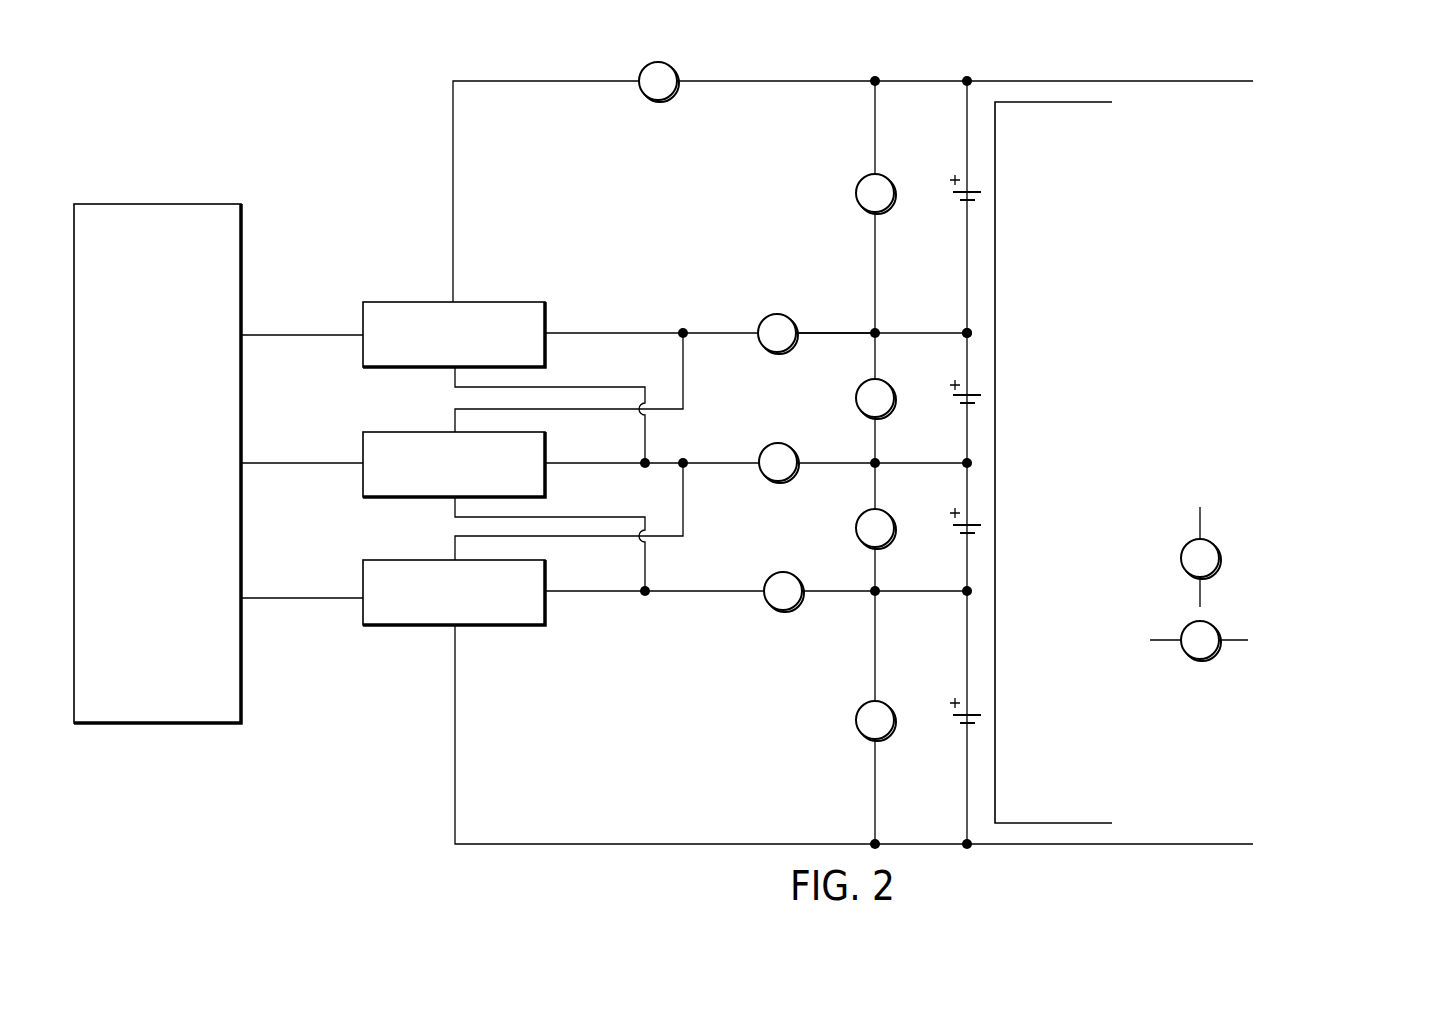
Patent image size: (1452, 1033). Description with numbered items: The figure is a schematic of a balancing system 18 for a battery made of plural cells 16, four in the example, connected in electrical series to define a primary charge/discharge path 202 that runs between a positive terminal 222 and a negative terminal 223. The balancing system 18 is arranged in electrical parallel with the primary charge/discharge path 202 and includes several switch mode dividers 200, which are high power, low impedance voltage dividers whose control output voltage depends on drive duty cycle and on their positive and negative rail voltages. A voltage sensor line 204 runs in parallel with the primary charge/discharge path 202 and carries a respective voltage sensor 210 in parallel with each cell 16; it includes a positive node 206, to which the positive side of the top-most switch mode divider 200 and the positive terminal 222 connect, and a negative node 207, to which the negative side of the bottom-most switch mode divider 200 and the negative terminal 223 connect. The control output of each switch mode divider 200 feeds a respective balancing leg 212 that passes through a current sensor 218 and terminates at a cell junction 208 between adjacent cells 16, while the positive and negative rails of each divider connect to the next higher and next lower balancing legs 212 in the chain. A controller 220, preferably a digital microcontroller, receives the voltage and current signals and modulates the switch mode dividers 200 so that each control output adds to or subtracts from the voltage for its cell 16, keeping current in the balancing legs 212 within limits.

The balancing system 18 is at (193, 83).
The battery cell 16 is at (949, 183).
The switch mode divider 200 is at (363, 350).
The primary charge/discharge path 202 is at (965, 267).
The voltage sensor line 204 is at (873, 135).
The positive node 206 is at (875, 77).
The negative node 207 is at (873, 842).
The cell junction 208 is at (964, 330).
The voltage sensor 210 is at (856, 193).
The balancing leg 212 is at (822, 338).
The current sensor 218 is at (795, 317).
The controller 220 is at (241, 257).
The positive terminal 222 is at (1370, 78).
The negative terminal 223 is at (1374, 852).